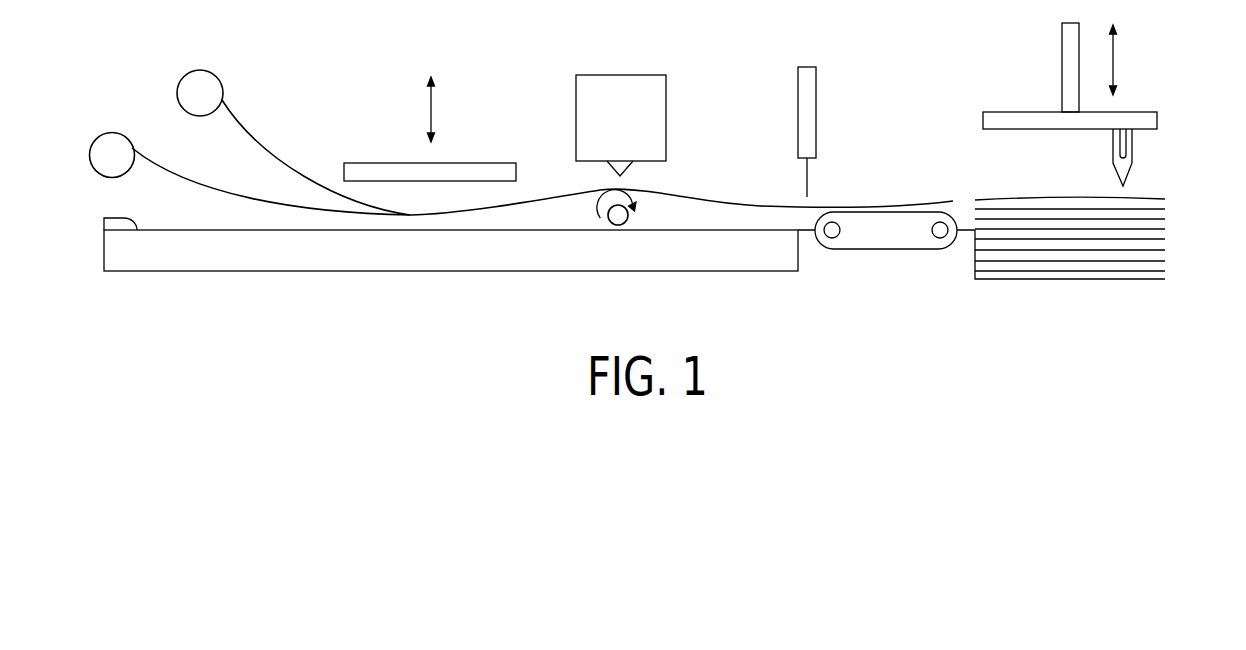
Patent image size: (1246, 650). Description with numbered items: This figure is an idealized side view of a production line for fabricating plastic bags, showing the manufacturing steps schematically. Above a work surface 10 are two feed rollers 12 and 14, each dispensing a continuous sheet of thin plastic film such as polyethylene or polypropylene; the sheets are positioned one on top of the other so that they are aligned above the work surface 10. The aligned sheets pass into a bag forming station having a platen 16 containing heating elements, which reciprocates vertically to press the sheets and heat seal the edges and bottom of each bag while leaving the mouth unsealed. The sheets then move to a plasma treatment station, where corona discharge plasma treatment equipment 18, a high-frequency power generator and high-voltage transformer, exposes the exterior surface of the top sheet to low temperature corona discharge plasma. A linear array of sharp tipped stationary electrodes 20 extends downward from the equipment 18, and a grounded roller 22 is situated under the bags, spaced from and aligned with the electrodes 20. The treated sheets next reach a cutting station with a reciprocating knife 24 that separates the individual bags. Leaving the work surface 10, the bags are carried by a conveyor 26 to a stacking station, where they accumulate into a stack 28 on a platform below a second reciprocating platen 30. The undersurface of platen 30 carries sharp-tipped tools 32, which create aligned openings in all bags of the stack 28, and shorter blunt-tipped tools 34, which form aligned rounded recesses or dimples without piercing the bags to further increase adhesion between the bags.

The work surface 10 is at (113, 222).
The feed roller 12 is at (113, 143).
The feed roller 14 is at (203, 83).
The platen 16 is at (380, 167).
The corona discharge plasma treatment equipment 18 is at (615, 82).
The electrodes 20 is at (630, 168).
The grounded roller 22 is at (614, 207).
The reciprocating knife 24 is at (817, 98).
The conveyor 26 is at (885, 238).
The stack 28 is at (1150, 238).
The second reciprocating platen 30 is at (1040, 117).
The sharp-tipped tool 32 is at (1132, 172).
The blunt-tipped tool 34 is at (1115, 140).